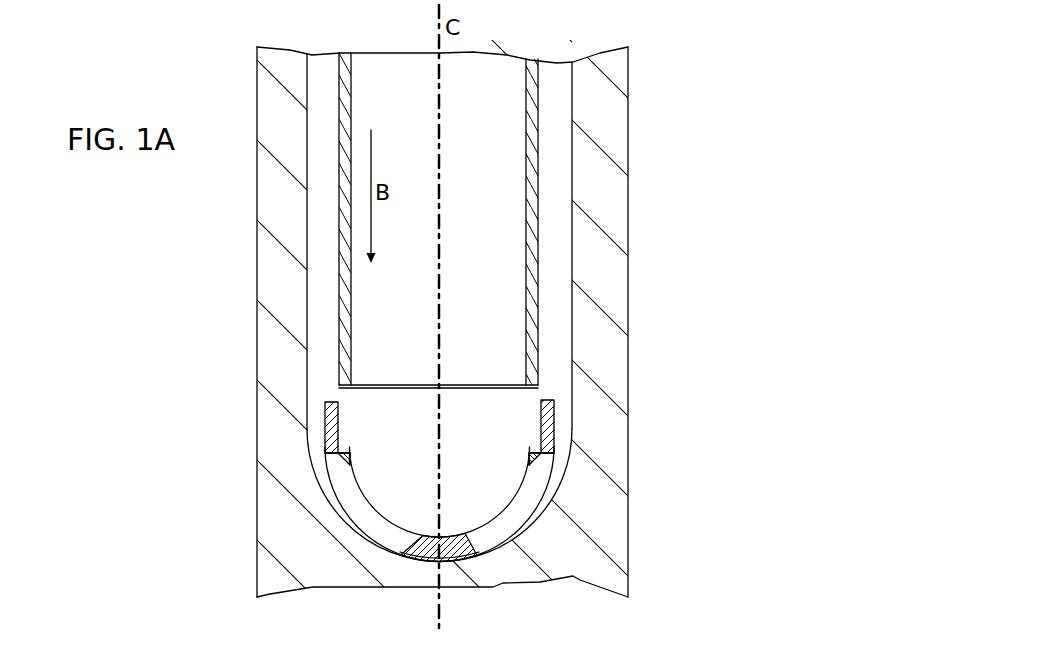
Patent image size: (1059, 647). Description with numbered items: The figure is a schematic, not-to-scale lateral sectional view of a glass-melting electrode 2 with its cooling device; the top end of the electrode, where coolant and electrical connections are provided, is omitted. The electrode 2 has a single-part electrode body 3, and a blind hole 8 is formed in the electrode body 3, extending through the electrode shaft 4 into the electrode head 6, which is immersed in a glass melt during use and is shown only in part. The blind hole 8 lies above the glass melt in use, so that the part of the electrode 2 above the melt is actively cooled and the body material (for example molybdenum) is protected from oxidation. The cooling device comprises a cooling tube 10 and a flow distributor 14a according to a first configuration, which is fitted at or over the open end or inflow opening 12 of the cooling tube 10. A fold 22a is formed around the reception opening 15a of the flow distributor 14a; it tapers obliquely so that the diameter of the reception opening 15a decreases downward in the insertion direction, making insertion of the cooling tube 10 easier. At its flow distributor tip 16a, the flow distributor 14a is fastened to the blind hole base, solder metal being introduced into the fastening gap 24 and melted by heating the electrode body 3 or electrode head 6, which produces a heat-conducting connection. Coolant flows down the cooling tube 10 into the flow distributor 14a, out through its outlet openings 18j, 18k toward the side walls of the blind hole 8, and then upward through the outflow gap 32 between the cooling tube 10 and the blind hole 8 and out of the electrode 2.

The glass-melting electrode 2 is at (674, 117).
The electrode body 3 is at (613, 180).
The electrode shaft 4 is at (652, 226).
The electrode head 6 is at (642, 586).
The blind hole 8 is at (320, 77).
The cooling tube 10 is at (340, 257).
The open end/inflow opening 12 is at (452, 410).
The flow distributor 14a is at (325, 442).
The reception opening 15a is at (366, 414).
The flow distributor tip 16a is at (438, 557).
The outlet opening 18j is at (350, 512).
The outlet opening 18k is at (530, 502).
The fold 22a is at (529, 452).
The fastening gap 24 is at (401, 559).
The outflow gap 32 is at (557, 88).